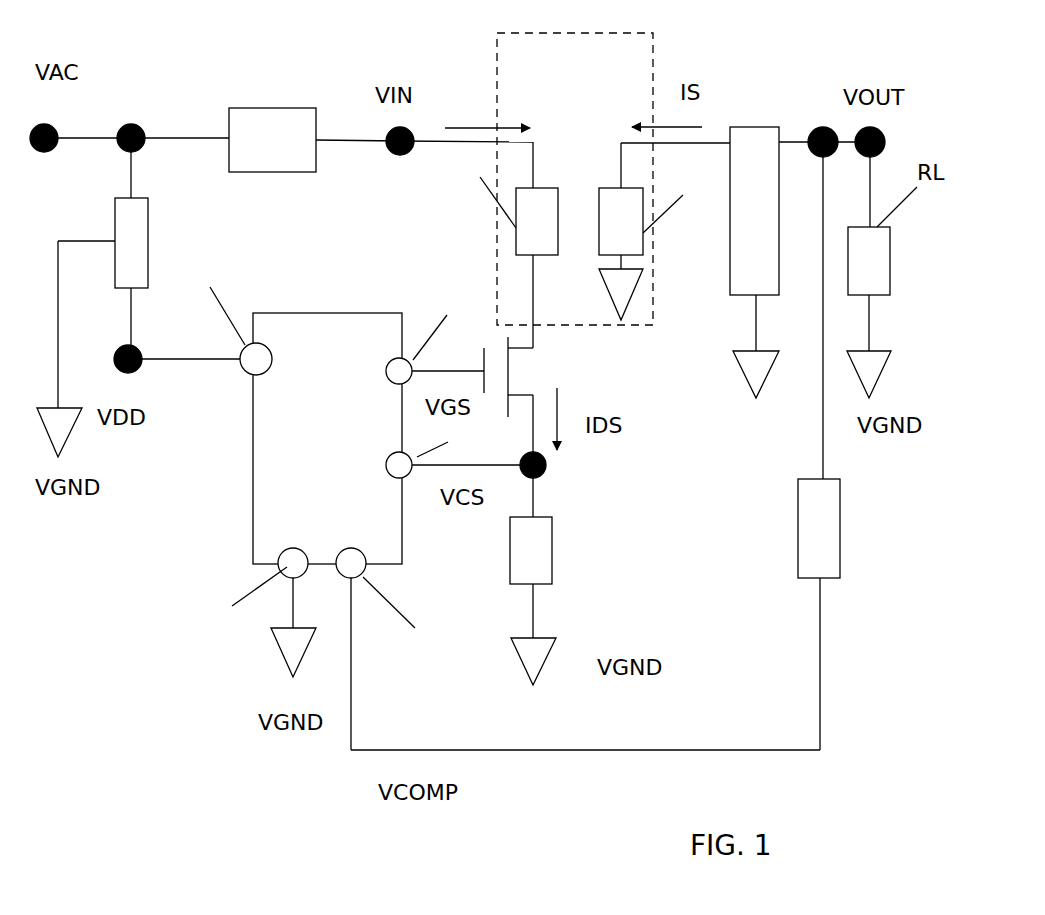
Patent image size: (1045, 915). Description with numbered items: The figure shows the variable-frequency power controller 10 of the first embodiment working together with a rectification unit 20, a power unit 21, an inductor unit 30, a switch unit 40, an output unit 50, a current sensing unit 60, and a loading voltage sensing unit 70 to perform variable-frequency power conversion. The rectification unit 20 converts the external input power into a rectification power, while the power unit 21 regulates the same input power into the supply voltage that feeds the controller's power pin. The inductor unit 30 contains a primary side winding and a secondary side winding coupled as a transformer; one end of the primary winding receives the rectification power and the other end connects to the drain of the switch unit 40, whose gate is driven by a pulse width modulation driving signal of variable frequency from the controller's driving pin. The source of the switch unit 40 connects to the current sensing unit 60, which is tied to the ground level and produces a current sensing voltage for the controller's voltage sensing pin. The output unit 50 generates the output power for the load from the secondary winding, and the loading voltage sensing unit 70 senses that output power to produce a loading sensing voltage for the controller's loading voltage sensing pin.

The variable-frequency power controller 10 is at (403, 532).
The rectification unit 20 is at (298, 108).
The power unit 21 is at (148, 248).
The inductor unit 30 is at (497, 297).
The switch unit 40 is at (528, 377).
The output unit 50 is at (742, 125).
The current sensing unit 60 is at (555, 562).
The loading voltage sensing unit 70 is at (842, 523).